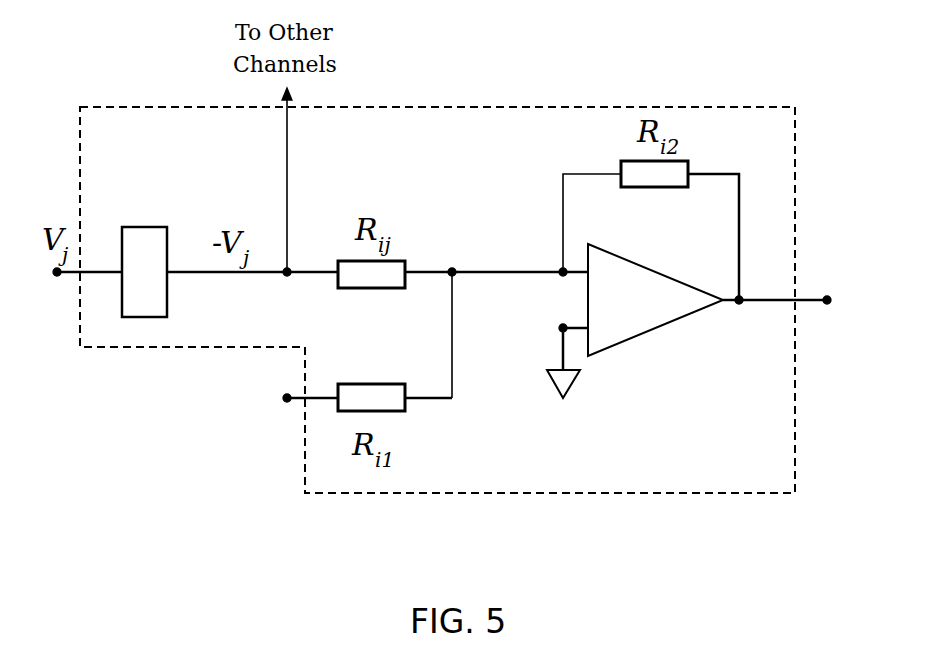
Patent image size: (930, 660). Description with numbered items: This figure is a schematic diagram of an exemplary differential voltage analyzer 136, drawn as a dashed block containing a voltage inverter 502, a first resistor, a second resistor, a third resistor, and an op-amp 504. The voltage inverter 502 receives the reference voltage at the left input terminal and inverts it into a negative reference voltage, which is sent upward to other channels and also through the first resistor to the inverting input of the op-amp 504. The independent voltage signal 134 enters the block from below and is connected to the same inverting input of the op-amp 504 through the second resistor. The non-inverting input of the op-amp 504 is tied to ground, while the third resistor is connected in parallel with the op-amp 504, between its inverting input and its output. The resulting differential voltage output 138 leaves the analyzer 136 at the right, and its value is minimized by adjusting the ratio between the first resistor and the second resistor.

The differential voltage analyzer 136 is at (447, 107).
The voltage inverter 502 is at (140, 222).
The op-amp 504 is at (655, 328).
The independent voltage signal Vi 134 is at (269, 419).
The output Ki 138 is at (819, 323).